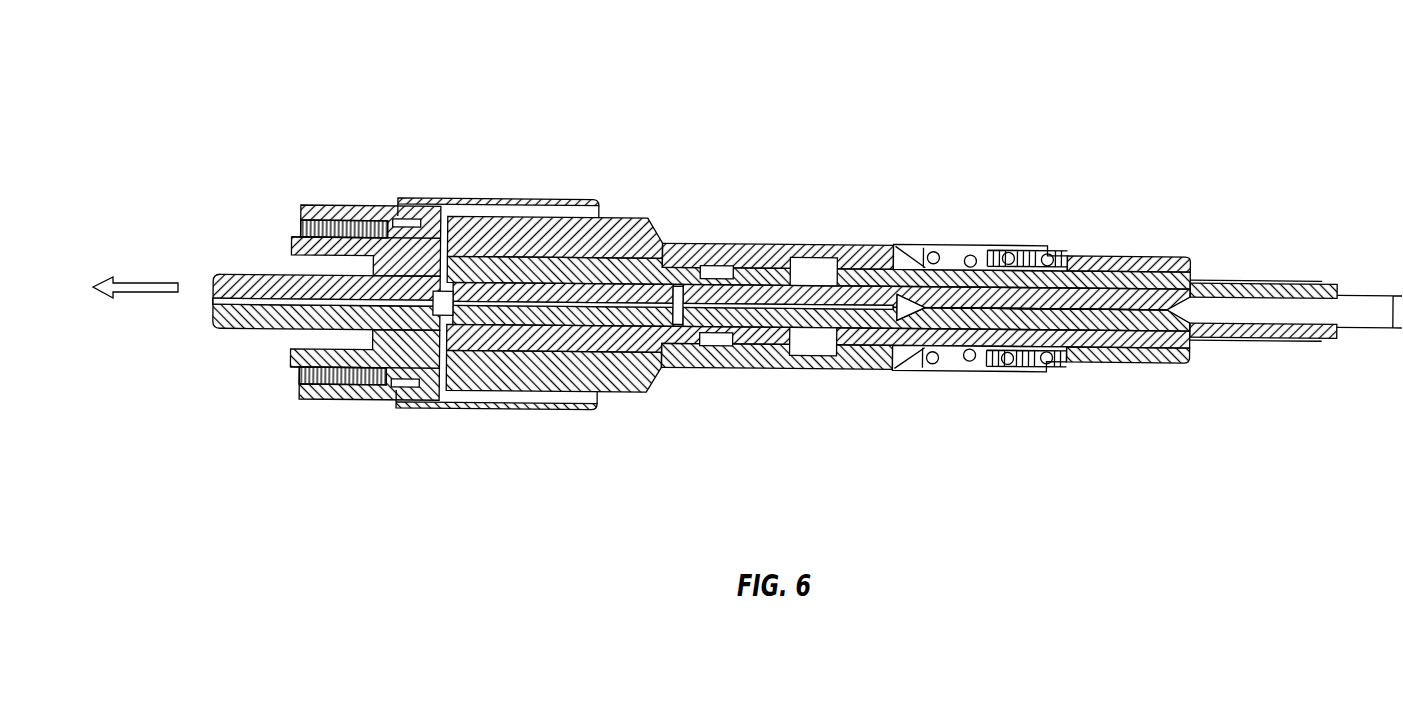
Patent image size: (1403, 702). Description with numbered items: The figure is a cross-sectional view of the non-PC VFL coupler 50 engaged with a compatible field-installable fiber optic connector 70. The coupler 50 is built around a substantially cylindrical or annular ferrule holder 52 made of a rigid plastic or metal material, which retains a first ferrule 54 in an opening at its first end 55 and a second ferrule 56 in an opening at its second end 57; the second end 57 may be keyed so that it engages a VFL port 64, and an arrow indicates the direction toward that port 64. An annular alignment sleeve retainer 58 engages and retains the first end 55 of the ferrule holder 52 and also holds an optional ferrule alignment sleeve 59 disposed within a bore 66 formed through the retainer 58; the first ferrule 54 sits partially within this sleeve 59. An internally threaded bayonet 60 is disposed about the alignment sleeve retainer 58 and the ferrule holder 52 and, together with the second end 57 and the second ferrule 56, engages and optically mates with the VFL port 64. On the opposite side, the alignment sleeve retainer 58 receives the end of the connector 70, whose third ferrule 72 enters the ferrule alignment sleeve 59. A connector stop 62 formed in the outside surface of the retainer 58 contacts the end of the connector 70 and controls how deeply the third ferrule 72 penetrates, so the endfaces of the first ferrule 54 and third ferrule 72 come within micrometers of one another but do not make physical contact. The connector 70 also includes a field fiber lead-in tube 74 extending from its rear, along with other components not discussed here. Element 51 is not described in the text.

The non-PC VFL coupler 50 is at (545, 135).
The ferrule end face 51 is at (455, 263).
The ferrule holder 52 is at (522, 258).
The first ferrule 54 is at (577, 282).
The first end of the ferrule holder 55 is at (505, 343).
The second ferrule 56 is at (272, 333).
The second end of the ferrule holder 57 is at (326, 341).
The alignment sleeve retainer 58 is at (690, 243).
The ferrule alignment sleeve 59 is at (708, 265).
The bayonet 60 is at (545, 412).
The connector stop 62 is at (730, 387).
The VFL port 64 is at (66, 307).
The bore 66 is at (738, 260).
The connector 70 is at (1147, 196).
The third ferrule 72 is at (816, 308).
The field fiber lead-in tube 74 is at (1363, 298).